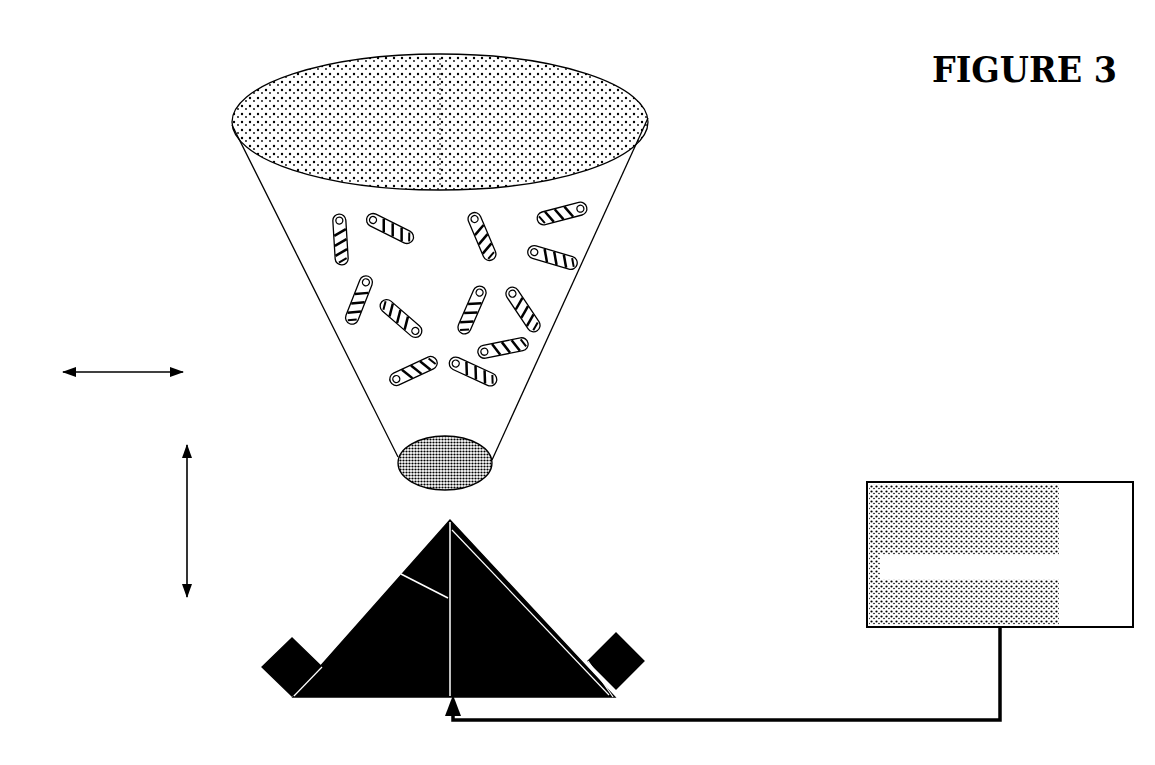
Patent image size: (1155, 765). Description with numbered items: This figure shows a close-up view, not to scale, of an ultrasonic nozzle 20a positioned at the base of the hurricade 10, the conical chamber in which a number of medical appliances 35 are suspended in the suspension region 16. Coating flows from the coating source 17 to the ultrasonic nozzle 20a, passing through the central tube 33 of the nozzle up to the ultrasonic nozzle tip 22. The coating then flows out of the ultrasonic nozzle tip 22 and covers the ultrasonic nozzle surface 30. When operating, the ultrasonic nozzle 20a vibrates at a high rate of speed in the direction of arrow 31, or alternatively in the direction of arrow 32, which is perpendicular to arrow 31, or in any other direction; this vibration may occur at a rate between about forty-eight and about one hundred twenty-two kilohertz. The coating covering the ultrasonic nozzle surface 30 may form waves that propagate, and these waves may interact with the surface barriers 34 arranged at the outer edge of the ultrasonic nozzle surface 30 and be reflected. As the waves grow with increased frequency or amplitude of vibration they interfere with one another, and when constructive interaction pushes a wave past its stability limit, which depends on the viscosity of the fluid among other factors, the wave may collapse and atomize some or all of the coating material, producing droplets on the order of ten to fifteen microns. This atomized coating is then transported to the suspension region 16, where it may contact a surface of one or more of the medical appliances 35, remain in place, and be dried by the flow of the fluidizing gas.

The hurricade 10 is at (284, 236).
The suspension region 16 is at (454, 274).
The medical appliances 35 is at (544, 302).
The arrow 32 is at (122, 372).
The arrow 31 is at (186, 505).
The surface barriers 34 is at (279, 650).
The ultrasonic nozzle surface 30 is at (537, 610).
The ultrasonic nozzle tip 22 is at (451, 520).
The central tube 33 is at (401, 574).
The ultrasonic nozzle 20a is at (412, 670).
The coating source 17 is at (1103, 576).